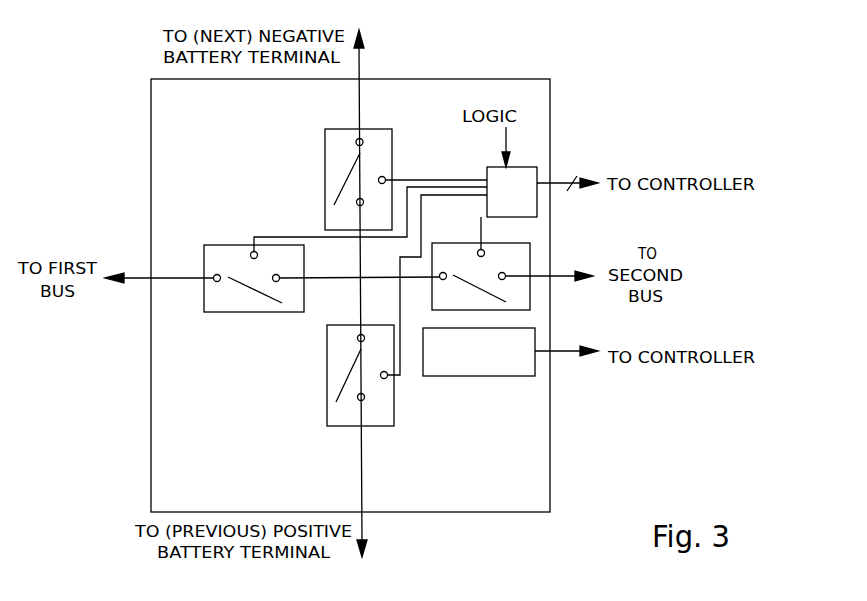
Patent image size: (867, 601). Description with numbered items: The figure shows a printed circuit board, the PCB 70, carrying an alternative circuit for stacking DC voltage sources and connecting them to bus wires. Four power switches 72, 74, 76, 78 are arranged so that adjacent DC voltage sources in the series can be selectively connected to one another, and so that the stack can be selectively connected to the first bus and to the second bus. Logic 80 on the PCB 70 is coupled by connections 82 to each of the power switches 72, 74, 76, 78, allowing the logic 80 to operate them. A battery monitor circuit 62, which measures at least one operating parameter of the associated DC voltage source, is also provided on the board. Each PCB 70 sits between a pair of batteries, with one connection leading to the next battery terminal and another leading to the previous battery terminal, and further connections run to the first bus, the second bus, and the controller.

The printed circuit board 70 is at (150, 177).
The power switch 72 is at (243, 313).
The power switch 74 is at (325, 165).
The power switch 76 is at (462, 242).
The power switch 78 is at (327, 393).
The logic 80 is at (495, 166).
The connections 82 is at (441, 176).
The battery monitor circuit 62 is at (490, 378).